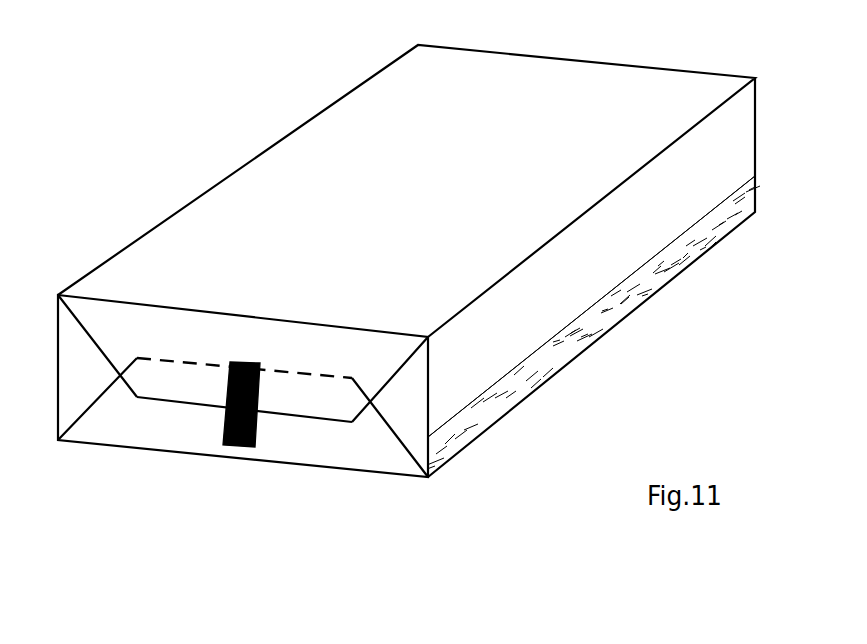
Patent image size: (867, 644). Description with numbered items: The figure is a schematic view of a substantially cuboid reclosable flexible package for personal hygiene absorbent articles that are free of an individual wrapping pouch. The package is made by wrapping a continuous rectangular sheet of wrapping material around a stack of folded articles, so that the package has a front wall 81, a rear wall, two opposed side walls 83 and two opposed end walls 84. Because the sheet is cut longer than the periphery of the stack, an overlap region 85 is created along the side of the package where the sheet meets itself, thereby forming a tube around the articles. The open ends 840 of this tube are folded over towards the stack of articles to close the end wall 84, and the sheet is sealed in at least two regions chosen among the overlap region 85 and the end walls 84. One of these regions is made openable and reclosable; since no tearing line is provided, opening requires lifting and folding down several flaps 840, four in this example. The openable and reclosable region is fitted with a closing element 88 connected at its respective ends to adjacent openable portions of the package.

The front wall 81 is at (295, 218).
The side wall 83 is at (667, 190).
The end wall 84 is at (367, 423).
The open ends of the tube 840 is at (183, 427).
The overlap region 85 is at (537, 368).
The closing element 88 is at (220, 433).